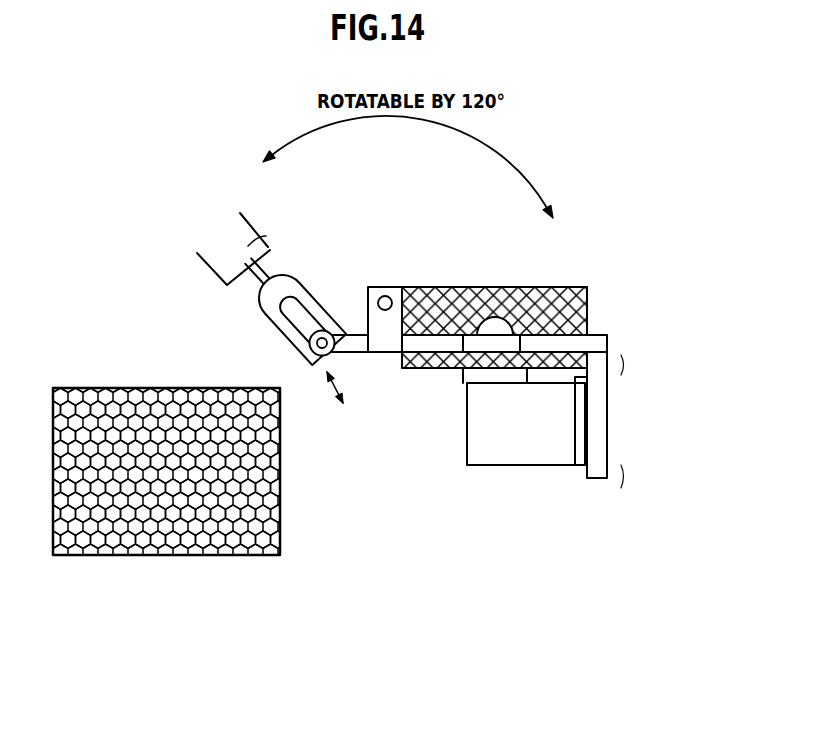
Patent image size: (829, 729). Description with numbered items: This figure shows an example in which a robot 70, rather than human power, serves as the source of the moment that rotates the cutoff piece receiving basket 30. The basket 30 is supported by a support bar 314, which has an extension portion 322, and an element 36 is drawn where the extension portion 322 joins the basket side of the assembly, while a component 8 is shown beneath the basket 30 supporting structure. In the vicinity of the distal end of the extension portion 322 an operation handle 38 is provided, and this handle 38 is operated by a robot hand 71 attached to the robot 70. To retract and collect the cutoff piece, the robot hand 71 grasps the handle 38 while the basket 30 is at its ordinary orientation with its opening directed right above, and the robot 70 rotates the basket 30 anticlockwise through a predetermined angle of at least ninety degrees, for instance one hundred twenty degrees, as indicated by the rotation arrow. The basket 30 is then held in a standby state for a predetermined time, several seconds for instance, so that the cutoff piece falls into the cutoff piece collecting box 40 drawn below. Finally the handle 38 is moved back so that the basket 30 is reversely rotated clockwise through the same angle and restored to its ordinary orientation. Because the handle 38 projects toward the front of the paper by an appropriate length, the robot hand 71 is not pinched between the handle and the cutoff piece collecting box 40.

The cylinder 8 is at (523, 450).
The cutoff piece receiving basket 30 is at (478, 295).
The connecting member 36 is at (385, 296).
The operation handle 38 is at (322, 354).
The cutoff piece collecting box 40 is at (165, 543).
The robot 70 is at (262, 233).
The robot hand 71 is at (307, 291).
The support bar 314 is at (598, 343).
The extension portion 322 is at (356, 353).